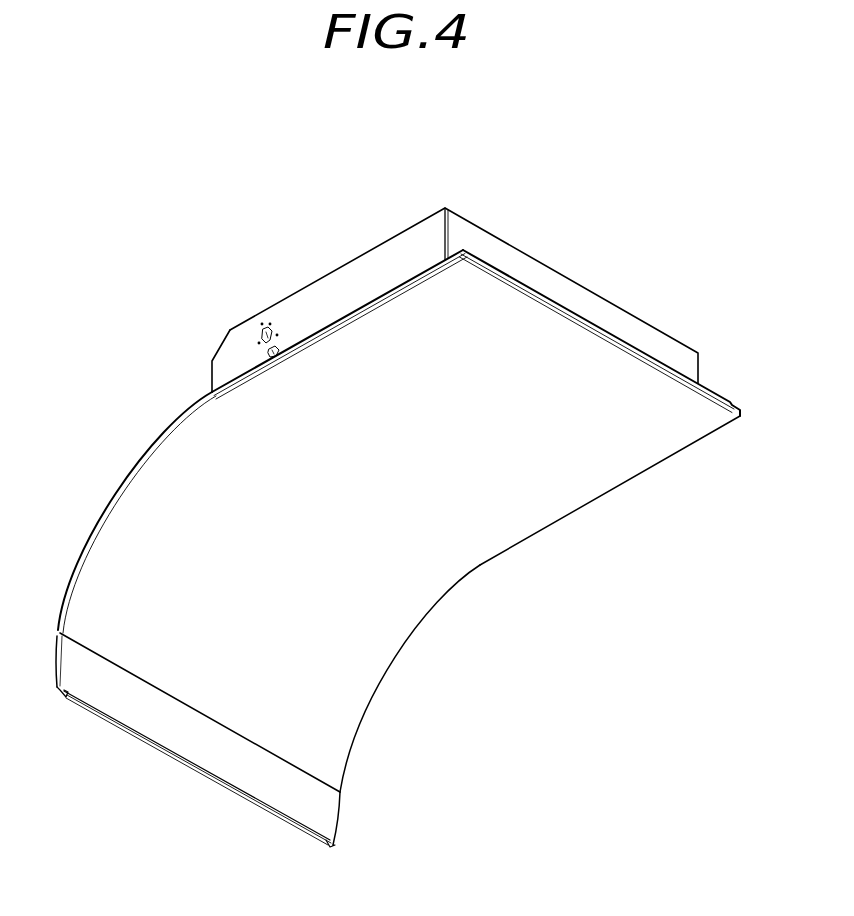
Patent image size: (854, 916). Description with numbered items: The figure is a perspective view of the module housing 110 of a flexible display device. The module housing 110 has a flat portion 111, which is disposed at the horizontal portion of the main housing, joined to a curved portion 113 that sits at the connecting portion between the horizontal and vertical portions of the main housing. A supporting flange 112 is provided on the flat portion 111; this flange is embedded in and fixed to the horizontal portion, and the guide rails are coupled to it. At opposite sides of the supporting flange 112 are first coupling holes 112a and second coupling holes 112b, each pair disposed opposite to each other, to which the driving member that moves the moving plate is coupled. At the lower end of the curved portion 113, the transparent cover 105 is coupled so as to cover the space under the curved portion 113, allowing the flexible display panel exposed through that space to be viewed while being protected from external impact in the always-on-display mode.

The module housing 110 is at (185, 174).
The flat portion 111 is at (640, 432).
The supporting flange 112 is at (385, 260).
The first coupling holes 112a is at (272, 350).
The second coupling holes 112b is at (275, 327).
The curved portion 113 is at (343, 725).
The transparent cover 105 is at (330, 808).